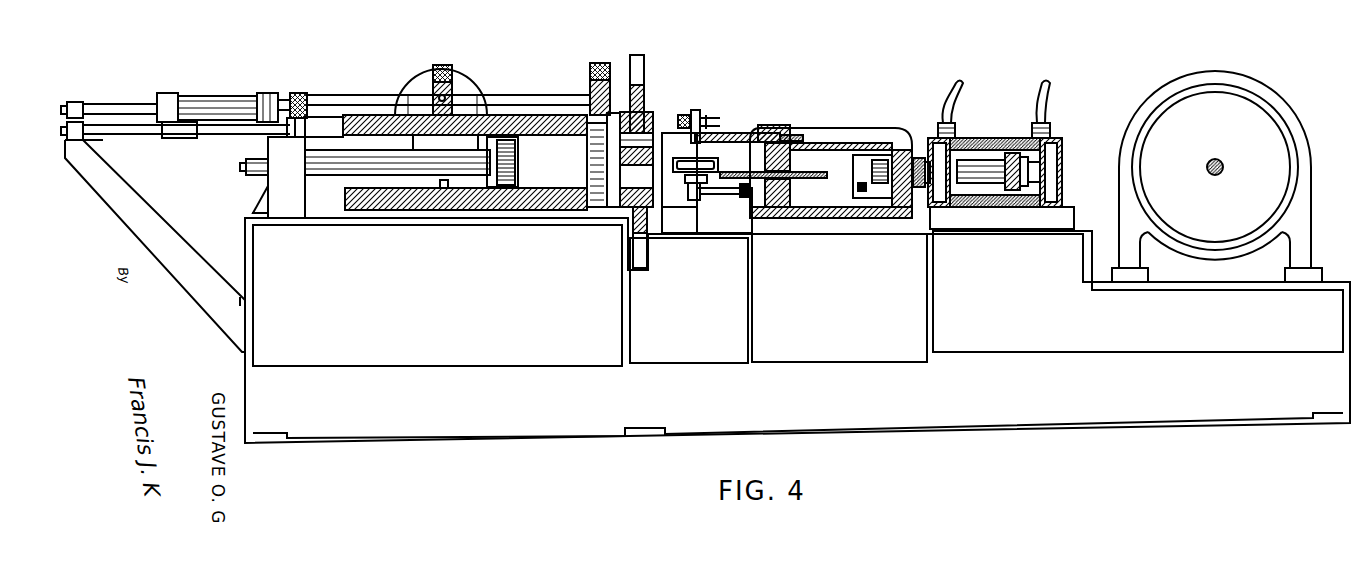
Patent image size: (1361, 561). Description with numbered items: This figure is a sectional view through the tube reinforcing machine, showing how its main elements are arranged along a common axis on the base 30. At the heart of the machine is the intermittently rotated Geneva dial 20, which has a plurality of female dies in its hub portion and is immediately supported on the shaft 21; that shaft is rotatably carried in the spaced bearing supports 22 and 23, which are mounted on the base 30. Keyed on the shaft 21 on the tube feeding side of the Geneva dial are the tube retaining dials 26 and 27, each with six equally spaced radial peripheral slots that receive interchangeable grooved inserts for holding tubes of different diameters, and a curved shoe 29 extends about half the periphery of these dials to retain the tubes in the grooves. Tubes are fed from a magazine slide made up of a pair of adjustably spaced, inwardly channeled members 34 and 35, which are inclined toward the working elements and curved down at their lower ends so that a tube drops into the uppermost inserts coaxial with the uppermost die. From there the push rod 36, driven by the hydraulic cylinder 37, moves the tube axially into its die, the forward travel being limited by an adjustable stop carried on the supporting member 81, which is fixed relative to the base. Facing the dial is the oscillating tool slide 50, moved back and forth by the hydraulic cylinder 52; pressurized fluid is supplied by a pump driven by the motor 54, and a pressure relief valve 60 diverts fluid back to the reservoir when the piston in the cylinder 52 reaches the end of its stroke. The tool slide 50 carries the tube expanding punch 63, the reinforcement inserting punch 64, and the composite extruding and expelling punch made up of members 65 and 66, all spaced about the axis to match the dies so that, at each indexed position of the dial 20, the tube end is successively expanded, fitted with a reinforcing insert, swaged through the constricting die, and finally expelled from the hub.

The Geneva dial 20 is at (645, 62).
The shaft 21 is at (361, 168).
The bearing support 22 is at (283, 184).
The bearing support 23 is at (669, 136).
The tube retaining dial 26 is at (497, 160).
The tube retaining dial 27 is at (595, 160).
The curved shoe 29 is at (428, 200).
The base 30 is at (465, 323).
The channeled member 34 is at (440, 54).
The channeled member 35 is at (600, 60).
The push rod 36 is at (222, 132).
The hydraulic cylinder 37 is at (204, 100).
The tool slide 50 is at (860, 135).
The hydraulic cylinder 52 is at (995, 148).
The motor 54 is at (1215, 141).
The pressure relief valve 60 is at (684, 113).
The tube expanding punch 63 is at (737, 131).
The reinforcement inserting punch 64 is at (773, 187).
The extruding punch member 65 is at (724, 210).
The expelling punch member 66 is at (690, 198).
The supporting member 81 is at (699, 112).